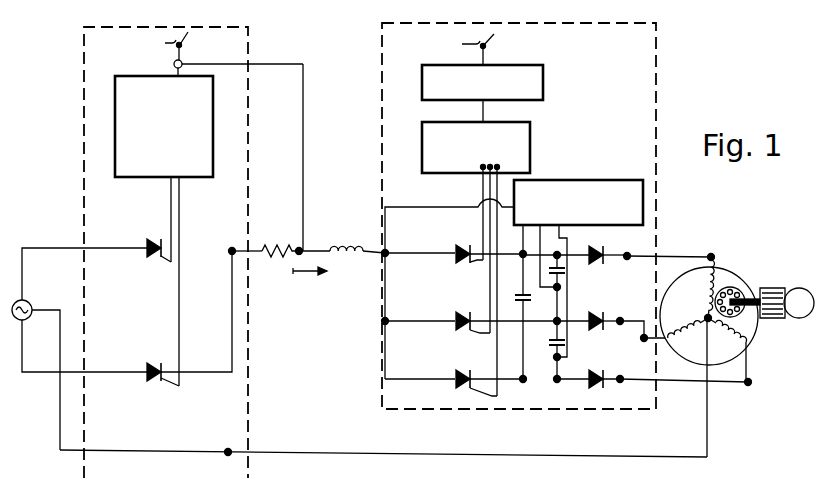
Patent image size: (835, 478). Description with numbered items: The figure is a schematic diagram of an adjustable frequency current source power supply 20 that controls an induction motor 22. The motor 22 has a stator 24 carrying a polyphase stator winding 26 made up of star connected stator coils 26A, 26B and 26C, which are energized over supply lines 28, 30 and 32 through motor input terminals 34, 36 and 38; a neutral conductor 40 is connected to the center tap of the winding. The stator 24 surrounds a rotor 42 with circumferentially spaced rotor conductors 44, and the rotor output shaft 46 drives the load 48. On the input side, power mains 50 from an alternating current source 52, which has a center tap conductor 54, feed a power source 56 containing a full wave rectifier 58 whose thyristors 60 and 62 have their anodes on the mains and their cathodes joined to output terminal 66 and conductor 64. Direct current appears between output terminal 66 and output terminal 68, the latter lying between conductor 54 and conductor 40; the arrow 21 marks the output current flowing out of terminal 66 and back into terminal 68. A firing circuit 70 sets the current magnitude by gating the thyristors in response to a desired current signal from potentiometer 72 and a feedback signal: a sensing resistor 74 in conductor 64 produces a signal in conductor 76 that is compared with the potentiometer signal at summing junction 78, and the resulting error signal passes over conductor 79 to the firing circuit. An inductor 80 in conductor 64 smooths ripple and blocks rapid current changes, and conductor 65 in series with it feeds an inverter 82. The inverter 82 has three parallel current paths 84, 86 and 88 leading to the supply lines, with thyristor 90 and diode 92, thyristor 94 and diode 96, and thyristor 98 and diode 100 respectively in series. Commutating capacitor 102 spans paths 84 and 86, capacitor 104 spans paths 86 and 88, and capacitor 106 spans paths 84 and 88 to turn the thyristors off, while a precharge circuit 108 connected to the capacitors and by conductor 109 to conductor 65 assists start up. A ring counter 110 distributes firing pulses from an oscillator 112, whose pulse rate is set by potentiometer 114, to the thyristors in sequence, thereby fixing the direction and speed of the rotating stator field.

The adjustable frequency current source power supply 20 is at (343, 163).
The output current 21 is at (310, 283).
The induction motor 22 is at (778, 270).
The stator 24 is at (752, 330).
The polyphase stator winding 26 is at (724, 270).
The stator coil 26A is at (702, 284).
The stator coil 26B is at (698, 318).
The stator coil 26C is at (726, 332).
The supply line 28 is at (692, 253).
The supply line 30 is at (683, 366).
The supply line 32 is at (687, 383).
The motor input terminal 34 is at (713, 256).
The motor input terminal 36 is at (646, 330).
The motor input terminal 38 is at (750, 383).
The neutral conductor 40 is at (383, 443).
The rotor 42 is at (759, 314).
The rotor conductors 44 is at (752, 321).
The rotor output shaft 46 is at (752, 298).
The load 48 is at (808, 288).
The power mains 50 is at (67, 244).
The alternating current source 52 is at (29, 300).
The center tap conductor 54 is at (58, 393).
The power source 56 is at (253, 55).
The full wave rectifier 58 is at (160, 315).
The thyristor 60 is at (161, 366).
The thyristor 62 is at (160, 242).
The conductor 64 is at (258, 258).
The conductor 65 is at (368, 263).
The output terminal 66 is at (234, 246).
The output terminal 68 is at (229, 449).
The firing circuit 70 is at (213, 124).
The potentiometer 72 is at (188, 37).
The resistor 74 is at (283, 246).
The conductor 76 is at (303, 100).
The summing junction 78 is at (173, 62).
The conductor 79 is at (210, 65).
The inductor 80 is at (359, 247).
The inverter 82 is at (659, 100).
The current path 84 is at (429, 253).
The current path 86 is at (427, 321).
The current path 88 is at (427, 379).
The thyristor 90 is at (470, 245).
The diode 92 is at (598, 252).
The thyristor 94 is at (466, 314).
The diode 96 is at (612, 314).
The thyristor 98 is at (466, 372).
The diode 100 is at (604, 370).
The commutating capacitor 102 is at (565, 272).
The commutating capacitor 104 is at (553, 336).
The commutating capacitor 106 is at (539, 296).
The precharge circuit 108 is at (638, 178).
The conductor 109 is at (447, 208).
The ring counter 110 is at (530, 152).
The oscillator 112 is at (543, 86).
The potentiometer 114 is at (492, 44).